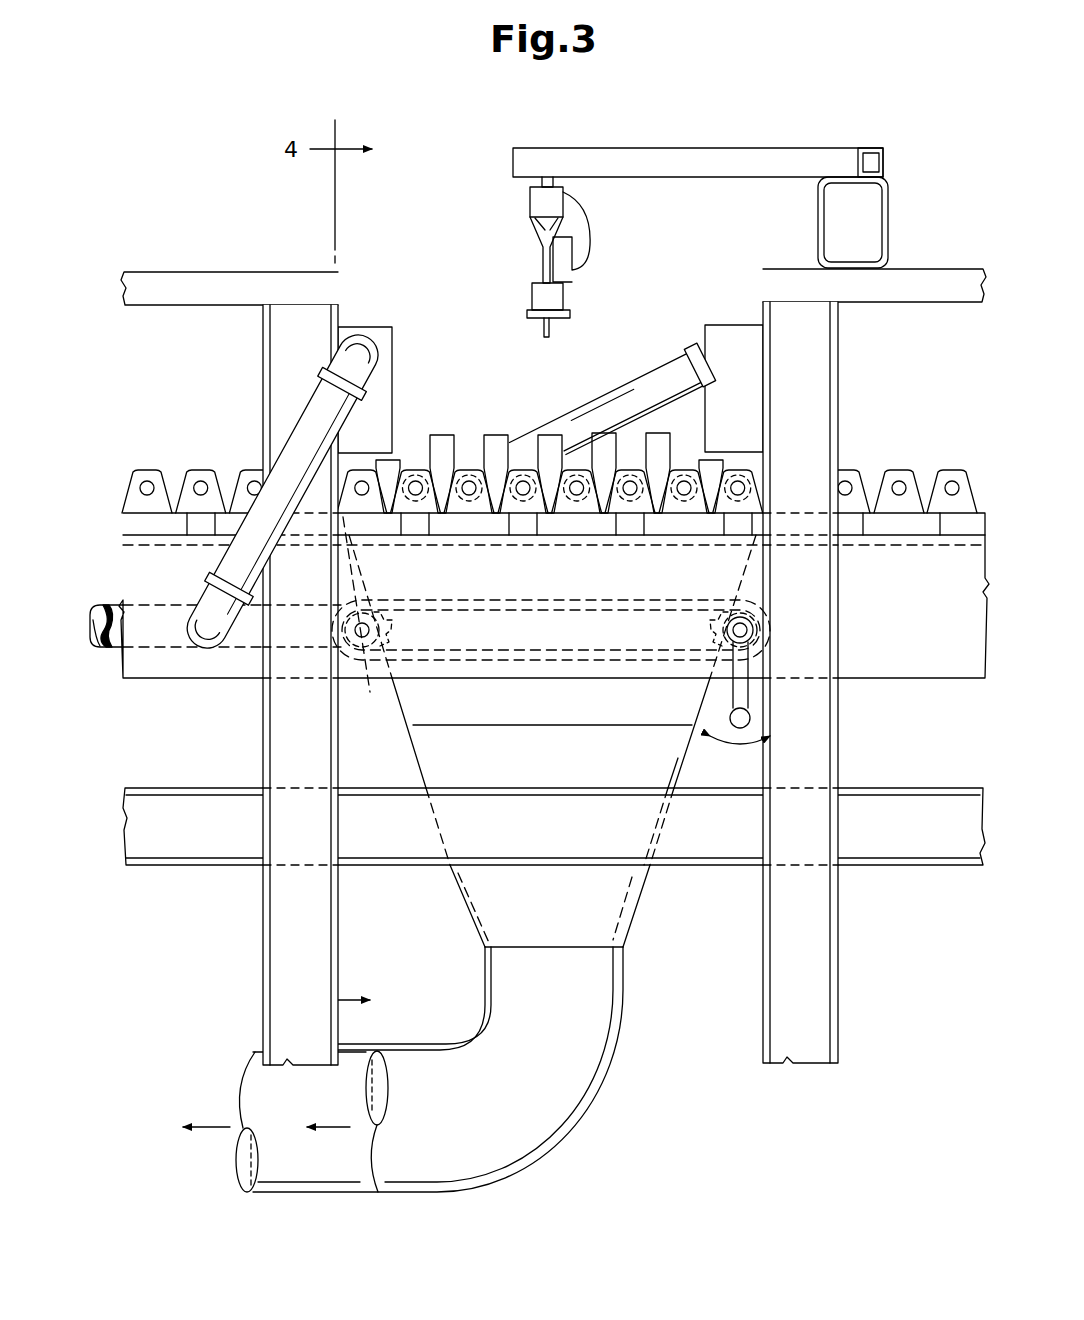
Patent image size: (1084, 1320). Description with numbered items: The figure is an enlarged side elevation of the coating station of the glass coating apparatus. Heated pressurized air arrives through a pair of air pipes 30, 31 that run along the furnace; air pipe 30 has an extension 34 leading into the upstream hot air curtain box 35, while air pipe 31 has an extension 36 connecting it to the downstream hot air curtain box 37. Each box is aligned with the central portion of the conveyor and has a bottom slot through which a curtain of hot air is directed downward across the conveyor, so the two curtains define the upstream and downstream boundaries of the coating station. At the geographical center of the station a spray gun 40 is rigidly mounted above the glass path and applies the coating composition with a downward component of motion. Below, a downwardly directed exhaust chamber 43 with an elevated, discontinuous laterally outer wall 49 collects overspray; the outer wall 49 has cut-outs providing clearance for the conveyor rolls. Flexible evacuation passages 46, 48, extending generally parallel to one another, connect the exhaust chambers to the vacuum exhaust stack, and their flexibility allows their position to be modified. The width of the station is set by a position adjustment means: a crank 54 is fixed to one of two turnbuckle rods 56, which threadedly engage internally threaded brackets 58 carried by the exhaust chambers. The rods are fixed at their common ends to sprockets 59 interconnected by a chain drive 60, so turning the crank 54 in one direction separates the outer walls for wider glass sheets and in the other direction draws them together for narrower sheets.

The air pipe 30 is at (103, 605).
The air pipe 31 is at (115, 650).
The extension 34 is at (665, 375).
The upstream hot air curtain box 35 is at (735, 330).
The extension 36 is at (299, 445).
The downstream hot air curtain box 37 is at (392, 396).
The spray gun 40 is at (530, 297).
The exhaust chamber 43 is at (418, 700).
The evacuation passage 46 is at (283, 1172).
The evacuation passage 48 is at (418, 1172).
The laterally outer wall 49 is at (448, 435).
The crank 54 is at (750, 698).
The turnbuckle rod 56 is at (752, 628).
The internally threaded bracket 58 is at (363, 665).
The sprocket 59 is at (392, 624).
The chain drive 60 is at (522, 600).